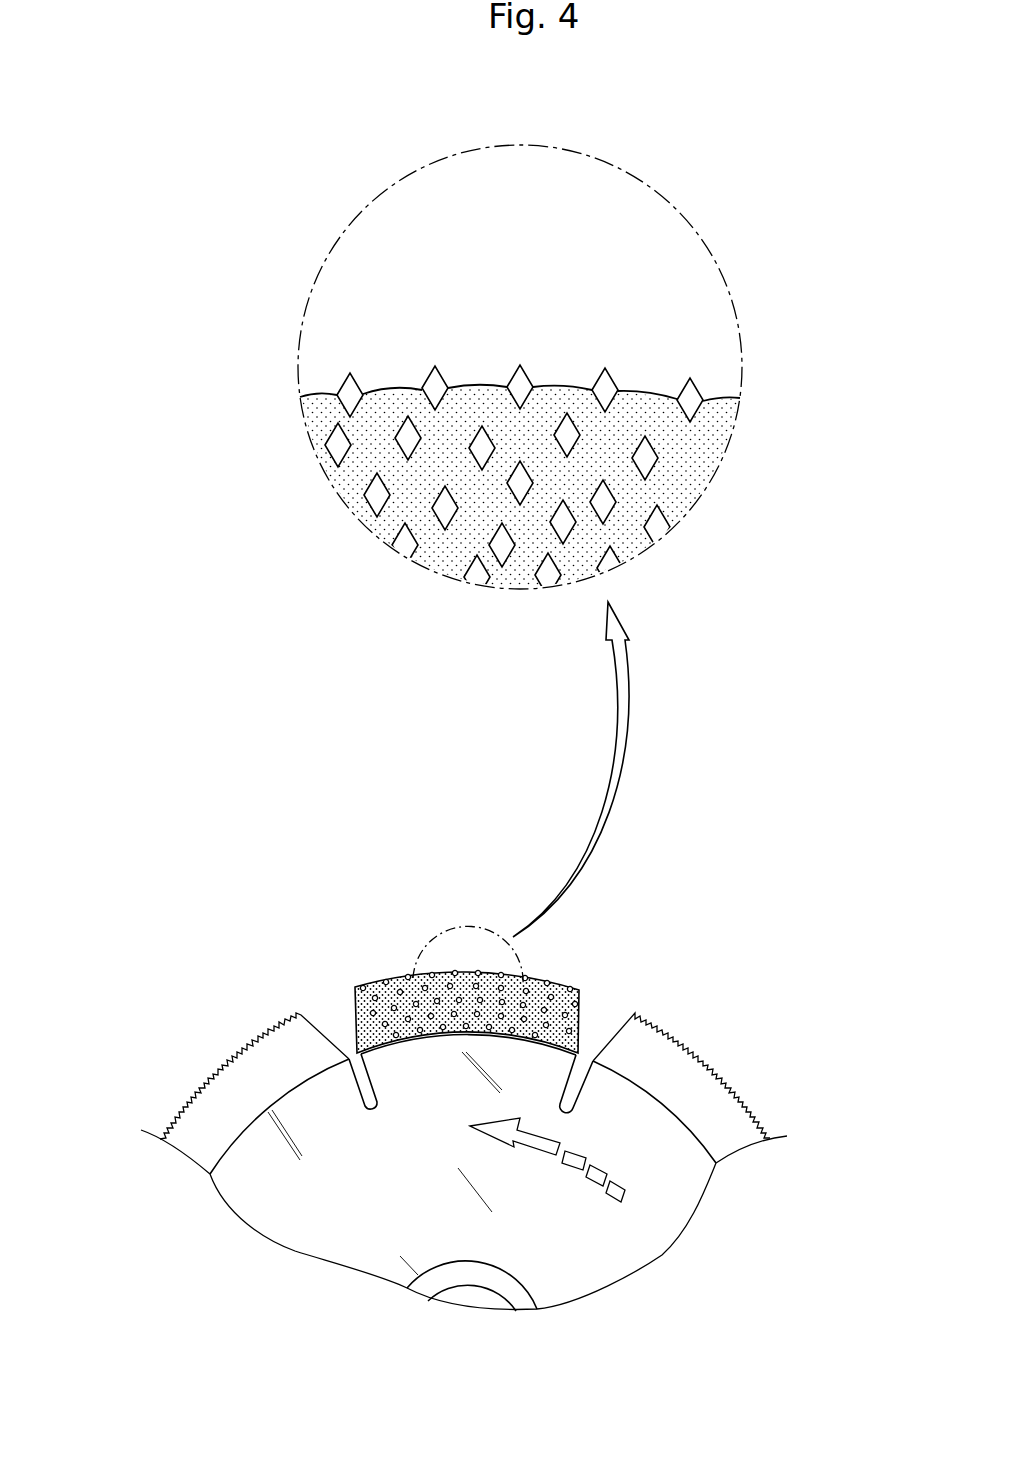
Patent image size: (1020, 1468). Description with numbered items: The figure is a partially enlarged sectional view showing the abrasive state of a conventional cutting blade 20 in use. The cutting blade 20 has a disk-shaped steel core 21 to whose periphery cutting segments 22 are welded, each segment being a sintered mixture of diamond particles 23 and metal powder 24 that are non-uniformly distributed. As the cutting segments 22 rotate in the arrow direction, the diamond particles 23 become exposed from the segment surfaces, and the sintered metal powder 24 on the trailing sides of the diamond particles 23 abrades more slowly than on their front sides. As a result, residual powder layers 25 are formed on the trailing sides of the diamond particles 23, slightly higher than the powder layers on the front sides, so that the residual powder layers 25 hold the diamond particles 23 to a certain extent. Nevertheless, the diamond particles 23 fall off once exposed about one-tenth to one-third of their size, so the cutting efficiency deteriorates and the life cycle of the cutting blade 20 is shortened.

The cutting blade 20 is at (755, 968).
The disk-shaped steel core 21 is at (337, 1230).
The cutting segments 22 is at (375, 983).
The diamond particles 23 is at (353, 375).
The metal powder 24 is at (545, 675).
The residual powder layers 25 is at (401, 380).